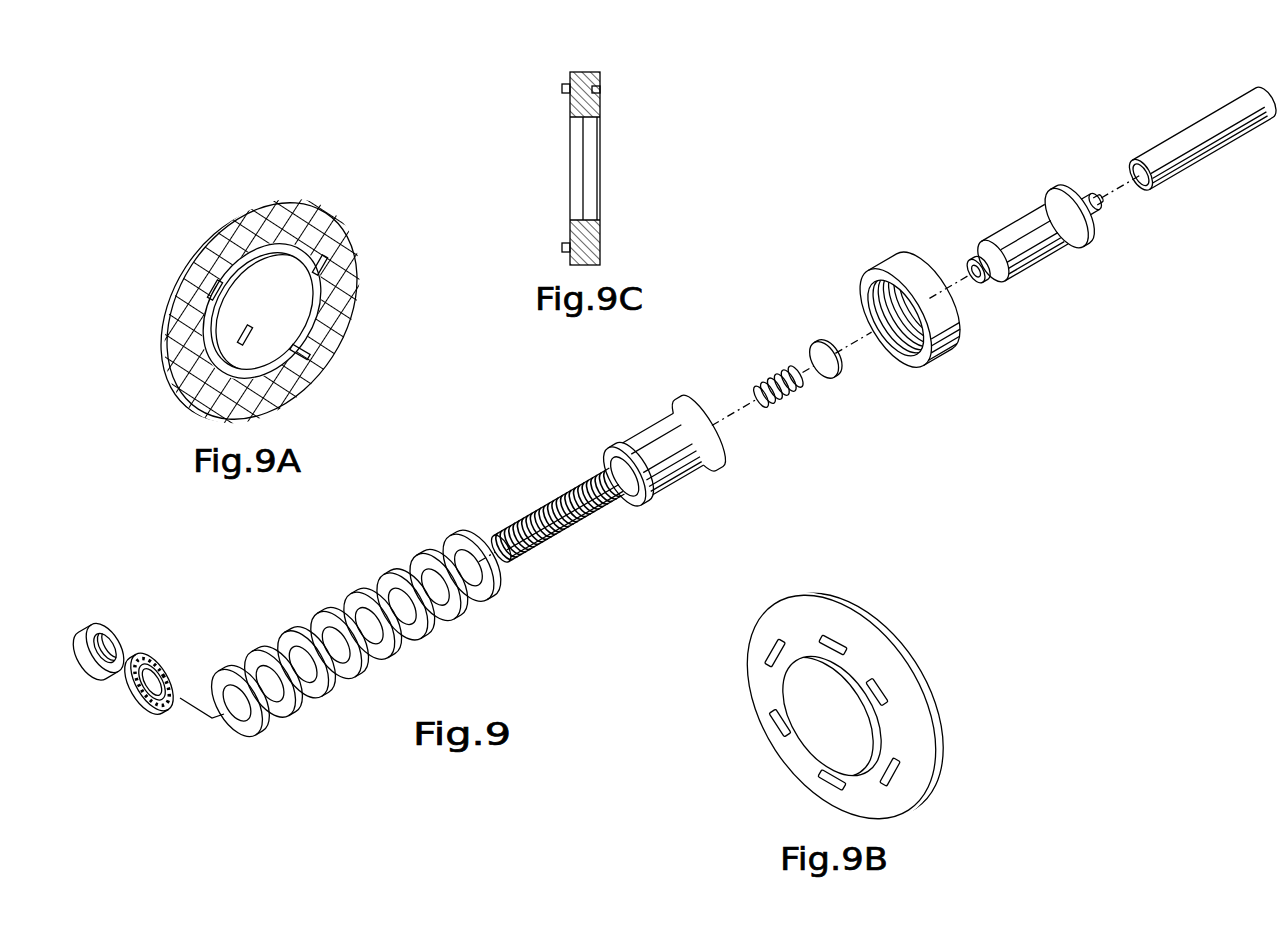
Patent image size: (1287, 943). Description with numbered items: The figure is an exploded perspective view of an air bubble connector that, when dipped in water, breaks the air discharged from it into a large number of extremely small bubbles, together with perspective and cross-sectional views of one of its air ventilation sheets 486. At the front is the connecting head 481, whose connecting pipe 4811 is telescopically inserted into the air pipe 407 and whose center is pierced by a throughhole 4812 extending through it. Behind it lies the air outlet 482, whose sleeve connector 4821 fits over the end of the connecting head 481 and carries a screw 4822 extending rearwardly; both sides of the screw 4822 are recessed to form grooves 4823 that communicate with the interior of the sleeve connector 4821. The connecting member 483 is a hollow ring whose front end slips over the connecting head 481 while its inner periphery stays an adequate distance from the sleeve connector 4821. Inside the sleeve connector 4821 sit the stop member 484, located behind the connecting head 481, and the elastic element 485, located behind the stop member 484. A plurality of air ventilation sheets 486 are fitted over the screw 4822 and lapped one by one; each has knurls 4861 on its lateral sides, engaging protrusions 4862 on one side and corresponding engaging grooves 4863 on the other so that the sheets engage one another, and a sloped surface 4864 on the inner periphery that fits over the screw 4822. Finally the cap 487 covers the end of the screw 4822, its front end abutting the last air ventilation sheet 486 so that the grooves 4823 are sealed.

In FIG. 9, the air pipe 407 is at (1178, 130).
In FIG. 9, the connecting head 481 is at (1055, 190).
In FIG. 9, the connecting pipe 4811 is at (1098, 213).
In FIG. 9, the throughhole 4812 is at (968, 257).
In FIG. 9, the air outlet 482 is at (584, 478).
In FIG. 9, the sleeve connector 4821 is at (645, 436).
In FIG. 9, the screw 4822 is at (510, 513).
In FIG. 9, the grooves 4823 is at (593, 503).
In FIG. 9, the connecting member 483 is at (940, 350).
In FIG. 9, the stop member 484 is at (822, 340).
In FIG. 9, the elastic element 485 is at (782, 400).
In FIG. 9, the air ventilation sheets 486 is at (325, 600).
In FIG. 9, the cap 487 is at (93, 620).
In FIG. 9A, the knurls 4861 is at (293, 212).
In FIG. 9C, the knurls 4861 is at (600, 192).
In FIG. 9C, the engaging protrusions 4862 is at (568, 90).
In FIG. 9B, the engaging protrusions 4862 is at (897, 777).
In FIG. 9A, the engaging grooves 4863 is at (210, 282).
In FIG. 9C, the engaging grooves 4863 is at (592, 247).
In FIG. 9A, the sloped surface 4864 is at (312, 302).
In FIG. 9C, the sloped surface 4864 is at (600, 110).